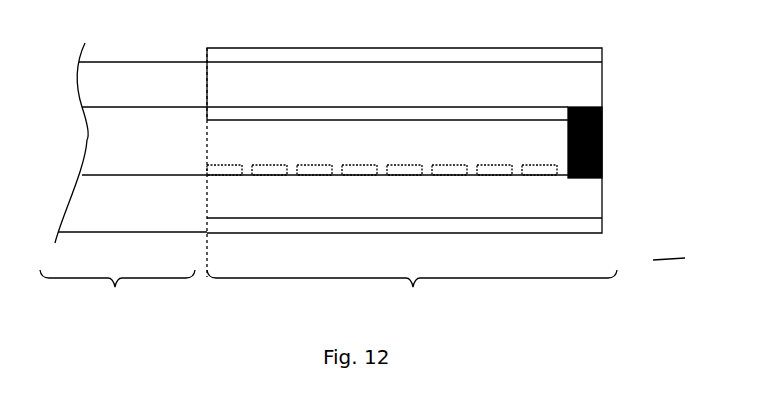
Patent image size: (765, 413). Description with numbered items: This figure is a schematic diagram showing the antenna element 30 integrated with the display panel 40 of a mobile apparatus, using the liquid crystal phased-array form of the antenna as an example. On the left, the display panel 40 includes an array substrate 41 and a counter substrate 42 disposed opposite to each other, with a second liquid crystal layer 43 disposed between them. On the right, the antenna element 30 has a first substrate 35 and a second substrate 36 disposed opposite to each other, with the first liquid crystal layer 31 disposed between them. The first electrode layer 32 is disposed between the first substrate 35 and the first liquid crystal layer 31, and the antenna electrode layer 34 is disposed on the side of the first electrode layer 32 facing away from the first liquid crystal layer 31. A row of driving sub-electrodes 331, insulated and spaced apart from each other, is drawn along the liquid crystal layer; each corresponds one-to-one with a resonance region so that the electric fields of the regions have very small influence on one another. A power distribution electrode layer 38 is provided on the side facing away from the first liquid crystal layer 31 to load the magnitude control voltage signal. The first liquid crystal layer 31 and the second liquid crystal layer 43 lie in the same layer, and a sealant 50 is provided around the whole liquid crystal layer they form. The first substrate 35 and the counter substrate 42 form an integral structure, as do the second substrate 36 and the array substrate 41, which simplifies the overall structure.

The antenna element 30 is at (412, 287).
The first liquid crystal layer 31 is at (385, 147).
The first electrode layer 32 is at (548, 112).
The driving sub-electrodes 331 is at (538, 173).
The antenna electrode layer 34 is at (563, 55).
The first substrate 35 is at (467, 82).
The second substrate 36 is at (593, 200).
The power distribution electrode layer 38 is at (680, 255).
The display panel 40 is at (123, 175).
The array substrate 41 is at (153, 195).
The counter substrate 42 is at (165, 83).
The second liquid crystal layer 43 is at (110, 157).
The sealant 50 is at (607, 138).